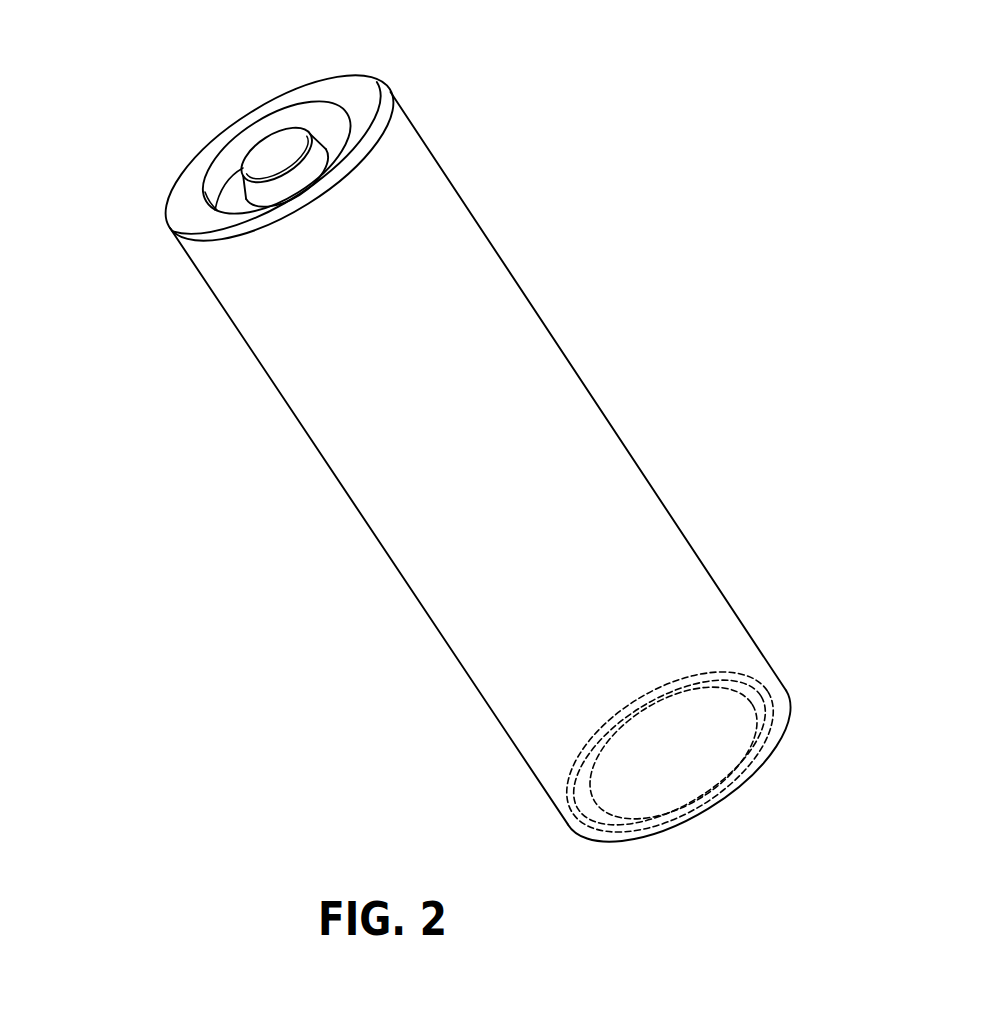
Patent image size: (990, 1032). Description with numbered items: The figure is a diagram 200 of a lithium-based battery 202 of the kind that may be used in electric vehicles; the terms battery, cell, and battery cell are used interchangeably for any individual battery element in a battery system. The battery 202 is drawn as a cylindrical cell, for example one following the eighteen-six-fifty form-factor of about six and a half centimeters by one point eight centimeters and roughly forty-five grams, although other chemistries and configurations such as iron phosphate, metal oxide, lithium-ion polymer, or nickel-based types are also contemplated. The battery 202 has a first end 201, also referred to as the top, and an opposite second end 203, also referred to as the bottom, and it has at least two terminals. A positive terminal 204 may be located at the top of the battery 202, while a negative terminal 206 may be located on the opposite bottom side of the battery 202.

The diagram 200 is at (536, 444).
The first end 201 is at (261, 143).
The lithium-based battery 202 is at (531, 303).
The second end 203 is at (812, 798).
The positive terminal 204 is at (267, 154).
The negative terminal 206 is at (180, 205).